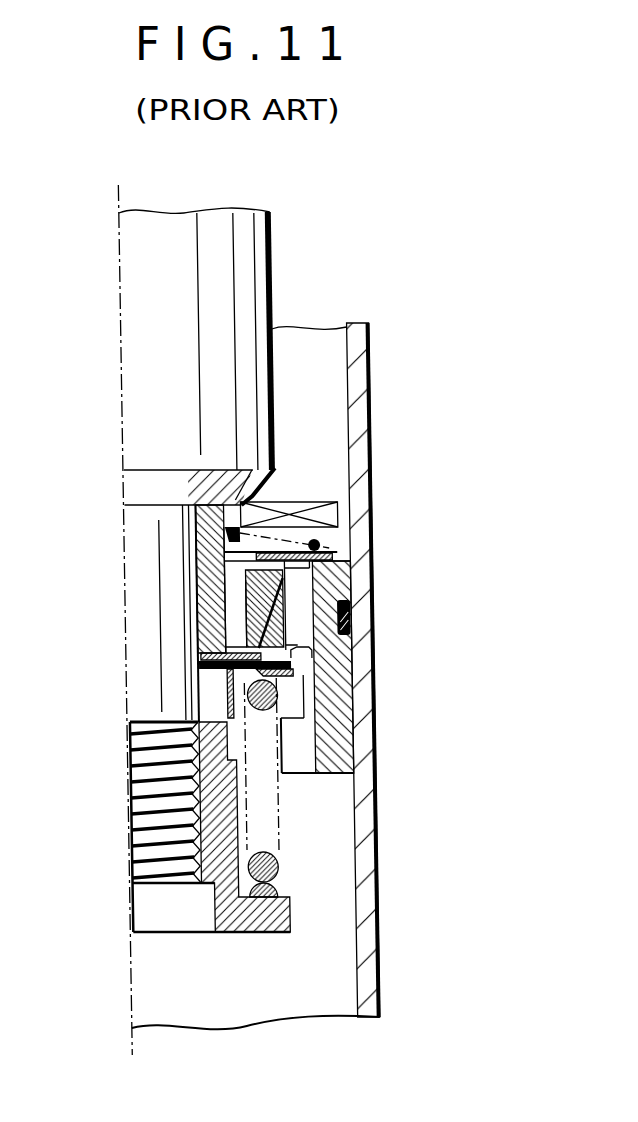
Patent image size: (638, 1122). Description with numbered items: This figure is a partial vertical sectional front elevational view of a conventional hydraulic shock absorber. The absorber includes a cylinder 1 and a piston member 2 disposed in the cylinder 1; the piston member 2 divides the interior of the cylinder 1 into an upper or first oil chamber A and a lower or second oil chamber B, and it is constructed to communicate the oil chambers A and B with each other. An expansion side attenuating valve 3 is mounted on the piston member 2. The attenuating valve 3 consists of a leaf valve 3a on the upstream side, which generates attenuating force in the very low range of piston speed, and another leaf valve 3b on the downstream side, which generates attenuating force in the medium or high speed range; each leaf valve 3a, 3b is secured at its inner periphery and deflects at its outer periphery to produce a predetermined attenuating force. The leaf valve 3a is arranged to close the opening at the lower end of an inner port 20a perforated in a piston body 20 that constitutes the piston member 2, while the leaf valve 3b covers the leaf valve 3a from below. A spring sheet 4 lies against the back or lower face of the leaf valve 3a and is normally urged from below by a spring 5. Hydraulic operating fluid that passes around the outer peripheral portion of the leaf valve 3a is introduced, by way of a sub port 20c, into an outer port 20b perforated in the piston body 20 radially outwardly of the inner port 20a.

The cylinder 1 is at (364, 958).
The piston member 2 is at (332, 781).
The expansion side attenuating valve 3 is at (243, 639).
The leaf valve 3a is at (205, 658).
The leaf valve 3b is at (205, 670).
The spring sheet 4 is at (287, 676).
The spring 5 is at (276, 868).
The piston body 20 is at (255, 640).
The inner port 20a is at (246, 580).
The outer port 20b is at (308, 587).
The sub port 20c is at (352, 625).
The first oil chamber A is at (302, 362).
The second oil chamber B is at (292, 983).